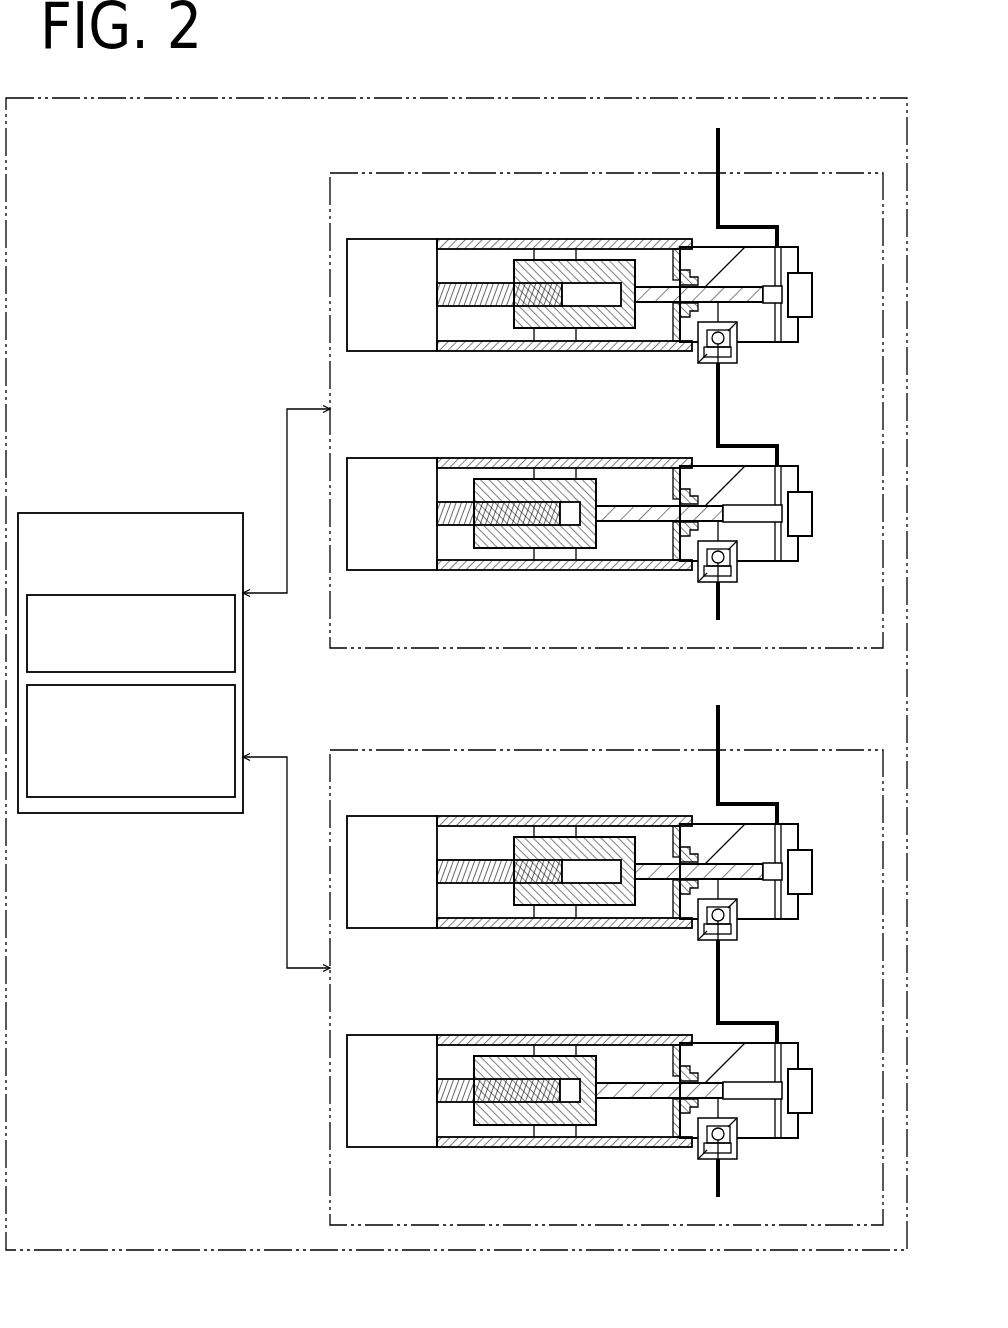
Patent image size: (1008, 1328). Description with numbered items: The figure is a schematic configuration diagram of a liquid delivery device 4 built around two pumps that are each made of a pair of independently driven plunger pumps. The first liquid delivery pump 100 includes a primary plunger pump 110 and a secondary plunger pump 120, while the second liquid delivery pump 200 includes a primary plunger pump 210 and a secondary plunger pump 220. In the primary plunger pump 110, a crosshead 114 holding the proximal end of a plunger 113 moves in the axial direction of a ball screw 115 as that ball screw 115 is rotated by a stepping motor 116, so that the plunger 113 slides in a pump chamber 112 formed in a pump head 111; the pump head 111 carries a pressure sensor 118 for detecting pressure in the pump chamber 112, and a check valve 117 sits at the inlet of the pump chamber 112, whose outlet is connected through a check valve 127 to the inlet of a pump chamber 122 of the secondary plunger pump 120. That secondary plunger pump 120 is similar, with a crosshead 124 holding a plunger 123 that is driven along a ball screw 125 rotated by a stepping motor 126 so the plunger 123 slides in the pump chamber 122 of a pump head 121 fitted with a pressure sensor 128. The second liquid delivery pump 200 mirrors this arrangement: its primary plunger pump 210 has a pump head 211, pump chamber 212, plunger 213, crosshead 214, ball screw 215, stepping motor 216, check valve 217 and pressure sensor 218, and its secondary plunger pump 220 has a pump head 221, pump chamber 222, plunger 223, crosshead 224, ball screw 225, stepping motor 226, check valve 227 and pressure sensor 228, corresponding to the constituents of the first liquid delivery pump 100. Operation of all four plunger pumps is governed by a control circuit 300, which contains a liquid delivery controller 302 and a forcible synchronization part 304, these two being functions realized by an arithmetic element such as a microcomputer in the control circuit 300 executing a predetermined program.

The liquid delivery device 4 is at (708, 97).
The first liquid delivery pump 100 is at (823, 172).
The second liquid delivery pump 200 is at (825, 749).
The control circuit 300 is at (131, 634).
The liquid delivery controller 302 is at (235, 637).
The forcible synchronization part 304 is at (235, 717).
The primary plunger pump 110 is at (458, 570).
The pump head 111 is at (798, 466).
The pump chamber 112 is at (757, 513).
The plunger 113 is at (621, 513).
The crosshead 114 is at (560, 540).
The ball screw 115 is at (502, 525).
The stepping motor 116 is at (392, 570).
The check valve 117 is at (737, 583).
The pressure sensor 118 is at (812, 510).
The secondary plunger pump 120 is at (468, 239).
The pump head 121 is at (798, 248).
The pump chamber 122 is at (775, 295).
The plunger 123 is at (650, 295).
The crosshead 124 is at (583, 270).
The ball screw 125 is at (487, 288).
The stepping motor 126 is at (392, 239).
The check valve 127 is at (700, 358).
The pressure sensor 128 is at (812, 285).
The primary plunger pump 210 is at (458, 1147).
The pump head 211 is at (798, 1043).
The pump chamber 212 is at (757, 1090).
The plunger 213 is at (621, 1090).
The crosshead 214 is at (560, 1117).
The ball screw 215 is at (502, 1102).
The stepping motor 216 is at (392, 1147).
The check valve 217 is at (737, 1160).
The pressure sensor 218 is at (812, 1087).
The secondary plunger pump 220 is at (468, 816).
The pump head 221 is at (798, 825).
The pump chamber 222 is at (775, 872).
The plunger 223 is at (650, 872).
The crosshead 224 is at (583, 847).
The ball screw 225 is at (487, 865).
The stepping motor 226 is at (392, 816).
The check valve 227 is at (700, 935).
The pressure sensor 228 is at (812, 862).